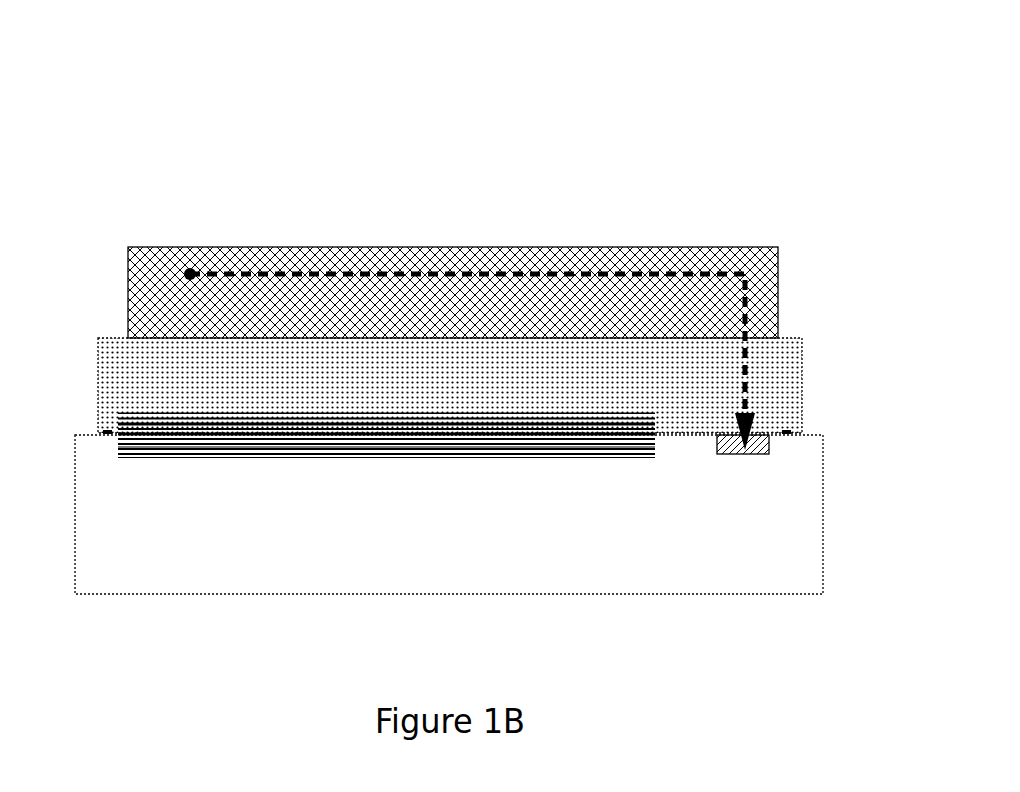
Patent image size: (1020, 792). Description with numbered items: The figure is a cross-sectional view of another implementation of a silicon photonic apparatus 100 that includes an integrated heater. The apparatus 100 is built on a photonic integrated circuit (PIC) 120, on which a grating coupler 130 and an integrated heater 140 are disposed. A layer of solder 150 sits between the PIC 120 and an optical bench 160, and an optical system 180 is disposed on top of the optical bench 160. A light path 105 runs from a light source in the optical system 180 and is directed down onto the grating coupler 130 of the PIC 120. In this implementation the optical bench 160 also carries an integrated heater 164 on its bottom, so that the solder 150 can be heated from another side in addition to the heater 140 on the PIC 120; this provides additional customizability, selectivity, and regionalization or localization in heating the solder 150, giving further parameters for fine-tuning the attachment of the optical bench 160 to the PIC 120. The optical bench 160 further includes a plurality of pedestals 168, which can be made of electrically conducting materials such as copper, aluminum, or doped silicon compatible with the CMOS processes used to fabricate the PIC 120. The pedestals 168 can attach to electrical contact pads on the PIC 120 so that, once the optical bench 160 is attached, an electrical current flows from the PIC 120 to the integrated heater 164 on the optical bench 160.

The silicon photonic apparatus 100 is at (104, 74).
The light path 105 is at (762, 246).
The photonic integrated circuit 120 is at (463, 520).
The grating coupler 130 is at (772, 446).
The integrated heater 140 is at (118, 447).
The layer of solder 150 is at (112, 433).
The optical bench 160 is at (463, 397).
The integrated heater 164 is at (120, 413).
The pedestals 168 is at (105, 432).
The optical system 180 is at (462, 305).